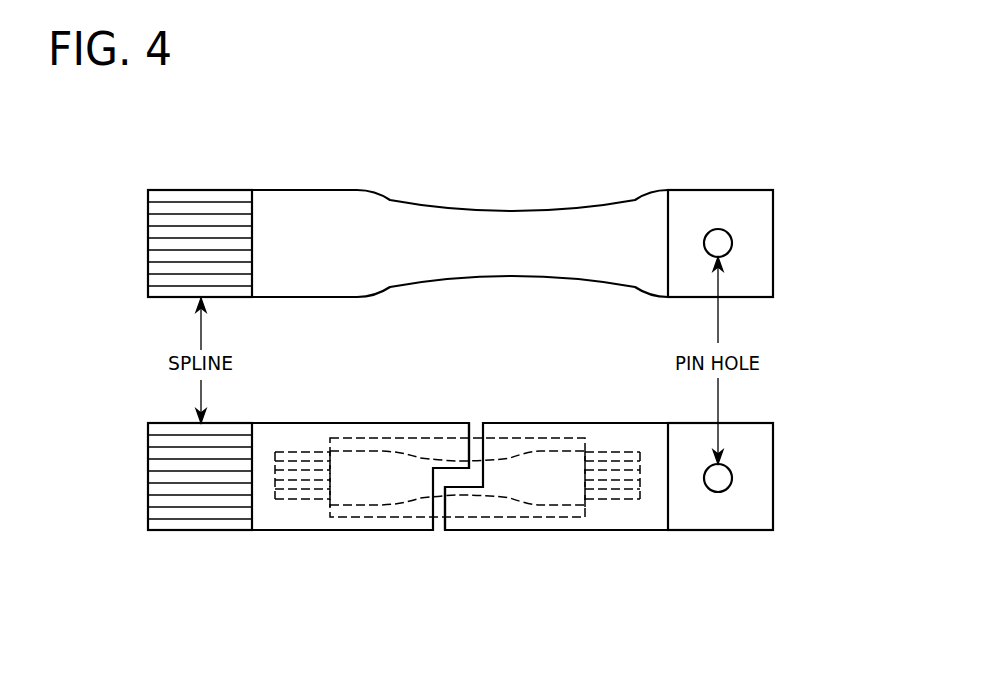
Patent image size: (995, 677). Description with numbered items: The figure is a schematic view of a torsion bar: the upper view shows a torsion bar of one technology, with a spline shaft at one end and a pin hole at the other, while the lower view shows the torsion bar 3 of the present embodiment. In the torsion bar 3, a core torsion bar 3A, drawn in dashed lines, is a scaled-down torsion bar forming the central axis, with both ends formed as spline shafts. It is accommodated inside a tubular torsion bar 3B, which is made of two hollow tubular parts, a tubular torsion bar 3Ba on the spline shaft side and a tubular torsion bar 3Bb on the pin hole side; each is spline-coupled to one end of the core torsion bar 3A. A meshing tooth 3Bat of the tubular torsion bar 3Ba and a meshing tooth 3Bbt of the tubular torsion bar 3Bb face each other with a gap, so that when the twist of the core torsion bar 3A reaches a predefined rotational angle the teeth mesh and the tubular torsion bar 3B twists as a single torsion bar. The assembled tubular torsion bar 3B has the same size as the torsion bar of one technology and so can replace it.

The torsion bar 3 is at (776, 402).
The core torsion bar 3A is at (518, 458).
The tubular torsion bar 3B is at (773, 570).
The tubular torsion bar 3Ba is at (368, 432).
The tubular torsion bar 3Bb is at (568, 432).
The meshing tooth 3Bat is at (452, 430).
The meshing tooth 3Bbt is at (469, 524).